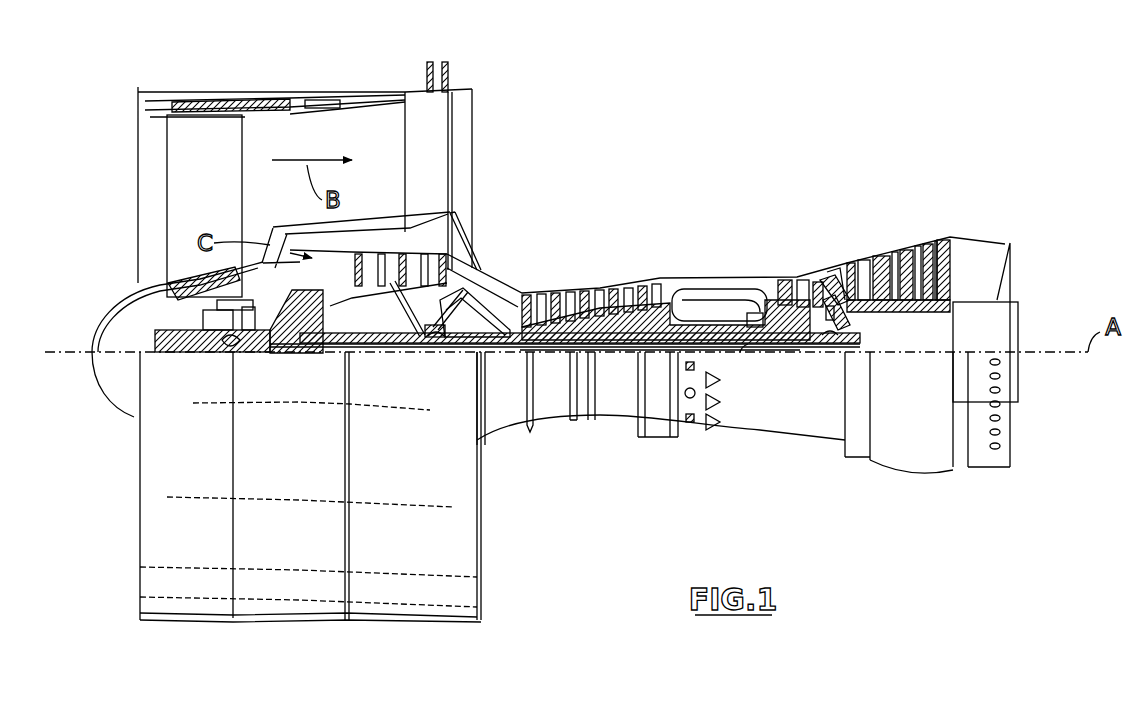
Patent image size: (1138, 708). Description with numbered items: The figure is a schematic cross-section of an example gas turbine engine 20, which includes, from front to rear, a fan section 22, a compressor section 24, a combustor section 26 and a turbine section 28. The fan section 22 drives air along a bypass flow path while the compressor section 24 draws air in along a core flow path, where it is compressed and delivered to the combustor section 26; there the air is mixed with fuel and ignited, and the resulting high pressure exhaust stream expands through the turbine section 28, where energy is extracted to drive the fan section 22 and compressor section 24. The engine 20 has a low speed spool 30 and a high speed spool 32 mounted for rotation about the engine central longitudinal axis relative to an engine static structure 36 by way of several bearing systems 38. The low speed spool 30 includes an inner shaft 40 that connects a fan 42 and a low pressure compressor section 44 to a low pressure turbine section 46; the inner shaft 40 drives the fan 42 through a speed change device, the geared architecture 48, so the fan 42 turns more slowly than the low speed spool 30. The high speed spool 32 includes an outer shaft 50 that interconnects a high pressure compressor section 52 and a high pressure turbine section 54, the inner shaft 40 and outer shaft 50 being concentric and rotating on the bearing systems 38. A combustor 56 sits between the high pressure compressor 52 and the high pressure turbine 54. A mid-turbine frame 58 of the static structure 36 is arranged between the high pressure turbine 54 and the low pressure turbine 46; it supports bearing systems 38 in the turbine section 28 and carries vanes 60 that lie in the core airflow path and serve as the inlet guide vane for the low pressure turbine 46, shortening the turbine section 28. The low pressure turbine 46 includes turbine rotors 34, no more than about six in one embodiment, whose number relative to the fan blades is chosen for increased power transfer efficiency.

The gas turbine engine 20 is at (738, 131).
The fan section 22 is at (125, 66).
The compressor section 24 is at (365, 194).
The combustor section 26 is at (720, 194).
The turbine section 28 is at (962, 192).
The low speed spool 30 is at (618, 358).
The high speed spool 32 is at (660, 285).
The turbine rotors 34 is at (908, 343).
The engine static structure 36 is at (657, 437).
The bearing systems 38 is at (233, 348).
The inner shaft 40 is at (490, 355).
The fan 42 is at (190, 209).
The low pressure compressor section 44 is at (452, 217).
The low pressure turbine section 46 is at (905, 245).
The geared architecture 48 is at (318, 335).
The outer shaft 50 is at (735, 350).
The high pressure compressor section 52 is at (590, 293).
The high pressure turbine section 54 is at (797, 283).
The combustor 56 is at (742, 298).
The mid-turbine frame 58 is at (830, 278).
The vanes 60 is at (856, 345).